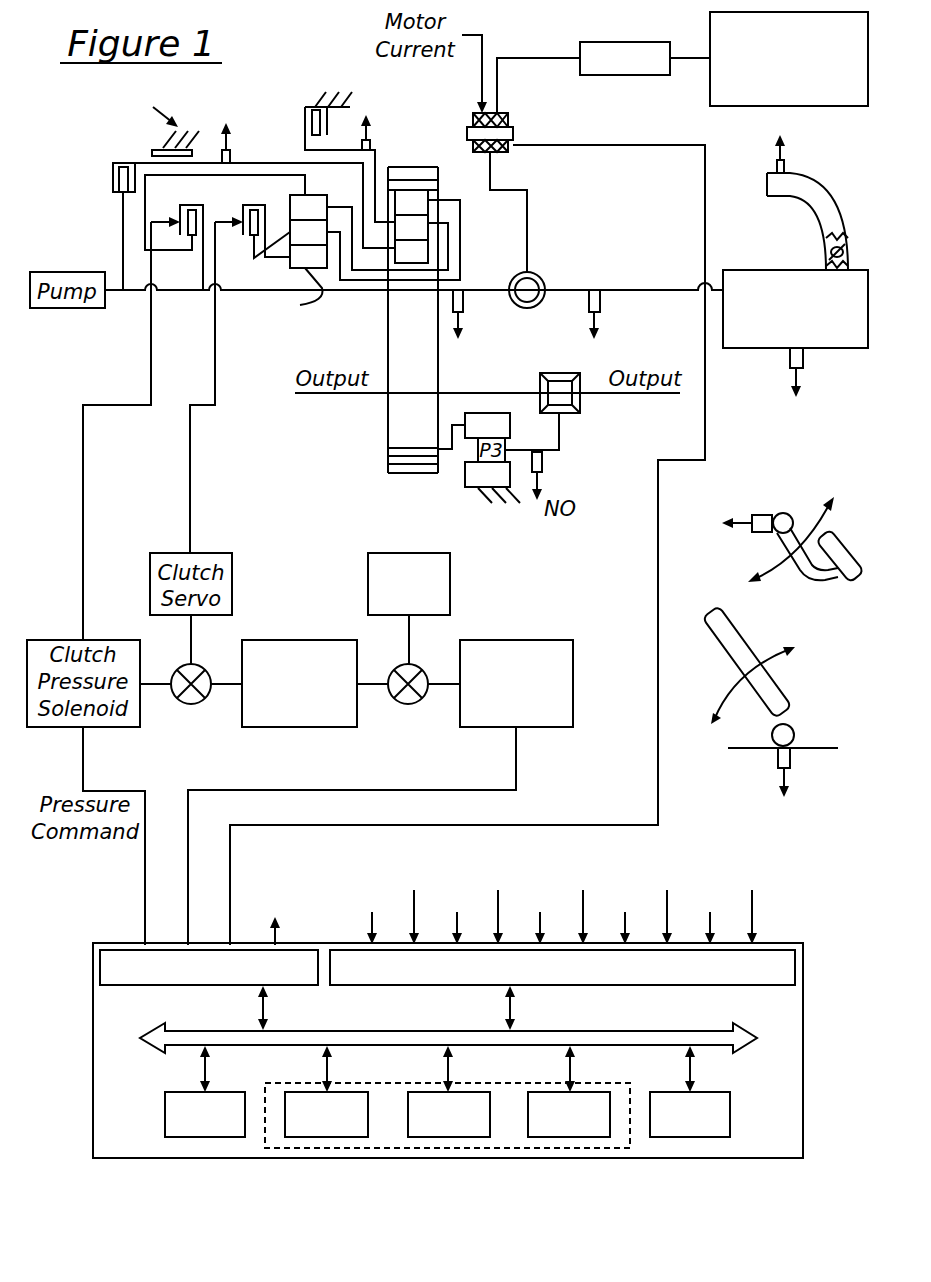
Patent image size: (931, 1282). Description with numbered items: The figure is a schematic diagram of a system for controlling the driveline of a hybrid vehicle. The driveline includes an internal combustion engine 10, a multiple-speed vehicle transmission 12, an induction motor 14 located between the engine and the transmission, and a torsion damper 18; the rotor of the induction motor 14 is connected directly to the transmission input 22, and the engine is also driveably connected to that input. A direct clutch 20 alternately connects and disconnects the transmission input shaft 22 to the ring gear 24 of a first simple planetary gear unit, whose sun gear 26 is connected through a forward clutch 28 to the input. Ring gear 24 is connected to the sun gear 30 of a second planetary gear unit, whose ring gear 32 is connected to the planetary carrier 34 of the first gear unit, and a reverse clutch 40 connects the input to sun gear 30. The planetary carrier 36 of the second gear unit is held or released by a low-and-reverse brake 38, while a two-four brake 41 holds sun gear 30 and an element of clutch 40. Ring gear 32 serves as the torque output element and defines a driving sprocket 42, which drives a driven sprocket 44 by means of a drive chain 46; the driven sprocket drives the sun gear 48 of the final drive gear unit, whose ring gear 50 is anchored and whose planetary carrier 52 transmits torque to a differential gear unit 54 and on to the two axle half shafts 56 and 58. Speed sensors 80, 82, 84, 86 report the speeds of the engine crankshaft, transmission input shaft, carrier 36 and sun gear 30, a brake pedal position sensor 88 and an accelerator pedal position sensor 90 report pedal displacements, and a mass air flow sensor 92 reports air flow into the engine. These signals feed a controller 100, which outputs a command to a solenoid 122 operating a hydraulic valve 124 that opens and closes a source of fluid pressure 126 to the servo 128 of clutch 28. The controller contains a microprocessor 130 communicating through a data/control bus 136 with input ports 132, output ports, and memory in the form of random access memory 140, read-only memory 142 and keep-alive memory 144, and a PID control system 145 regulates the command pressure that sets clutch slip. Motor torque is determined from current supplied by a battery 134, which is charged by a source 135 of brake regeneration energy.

The internal combustion engine 10 is at (745, 270).
The multiple-speed vehicle transmission 12 is at (124, 349).
The induction motor 14 is at (510, 114).
The torsion damper 18 is at (537, 277).
The direct clutch 20 is at (181, 210).
The transmission input shaft 22 is at (437, 274).
The ring gear 24 is at (300, 176).
The sun gear 26 is at (299, 293).
The forward clutch 28 is at (245, 231).
The sun gear 30 is at (428, 248).
The ring gear 32 is at (433, 195).
The planetary carrier 34 is at (272, 259).
The planetary carrier 36 is at (380, 218).
The low-and-reverse brake 38 is at (321, 120).
The reverse clutch 40 is at (113, 179).
The 2/4 brake 41 is at (150, 152).
The driving sprocket 42 is at (422, 182).
The driven sprocket 44 is at (396, 472).
The drive chain 46 is at (398, 315).
The sun gear 48 is at (490, 413).
The ring gear 50 is at (465, 472).
The planetary carrier 52 is at (560, 433).
The differential gear unit 54 is at (596, 367).
The axle half shaft 56 is at (628, 396).
The axle half shaft 58 is at (335, 394).
The speed sensor 80 is at (601, 298).
The speed sensor 82 is at (465, 300).
The speed sensor 84 is at (378, 143).
The speed sensor 86 is at (222, 150).
The brake pedal position sensor 88 is at (772, 515).
The accelerator pedal position sensor 90 is at (790, 757).
The mass air flow sensor 92 is at (784, 167).
The controller 100 is at (118, 943).
The solenoid 122 is at (574, 684).
The hydraulic valve 124 is at (427, 669).
The source of fluid pressure 126 is at (302, 640).
The servo 128 is at (388, 553).
The microprocessor 130 is at (165, 1115).
The input ports 132 is at (803, 968).
The battery 134 is at (625, 41).
The source of brake regeneration energy 135 is at (709, 88).
The data/control bus 136 is at (387, 1032).
The random access memory 140 is at (589, 1092).
The read-only memory 142 is at (428, 1092).
The keep-alive memory 144 is at (305, 1092).
The PID control system 145 is at (730, 1118).